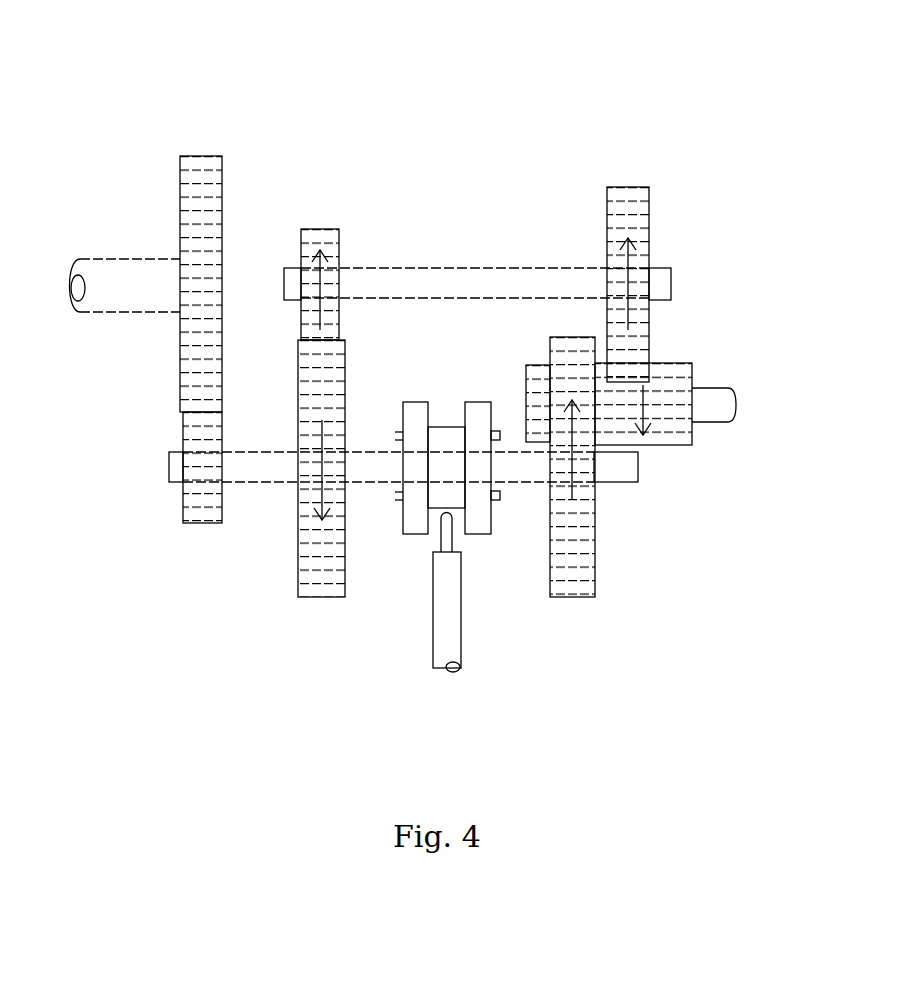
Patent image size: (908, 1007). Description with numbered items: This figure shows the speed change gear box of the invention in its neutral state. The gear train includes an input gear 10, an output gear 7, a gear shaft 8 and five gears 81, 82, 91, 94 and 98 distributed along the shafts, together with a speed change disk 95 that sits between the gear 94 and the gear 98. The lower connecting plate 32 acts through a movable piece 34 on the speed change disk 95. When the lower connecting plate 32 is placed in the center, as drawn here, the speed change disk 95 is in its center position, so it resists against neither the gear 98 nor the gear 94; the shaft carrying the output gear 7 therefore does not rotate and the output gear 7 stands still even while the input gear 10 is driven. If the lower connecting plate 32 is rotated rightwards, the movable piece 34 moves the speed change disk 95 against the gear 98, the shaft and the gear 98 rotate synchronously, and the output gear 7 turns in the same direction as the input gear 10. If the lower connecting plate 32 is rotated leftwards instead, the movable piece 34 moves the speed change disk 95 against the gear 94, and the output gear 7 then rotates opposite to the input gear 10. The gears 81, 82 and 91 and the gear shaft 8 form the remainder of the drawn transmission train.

The output gear 7 is at (216, 170).
The gear shaft 8 is at (461, 280).
The input gear 10 is at (716, 410).
The lower connecting plate 32 is at (450, 620).
The movable piece 34 is at (459, 530).
The gear 81 is at (644, 216).
The gear 82 is at (318, 240).
The gear 91 is at (197, 485).
The gear 94 is at (322, 525).
The speed change disk 95 is at (414, 515).
The gear 98 is at (578, 558).